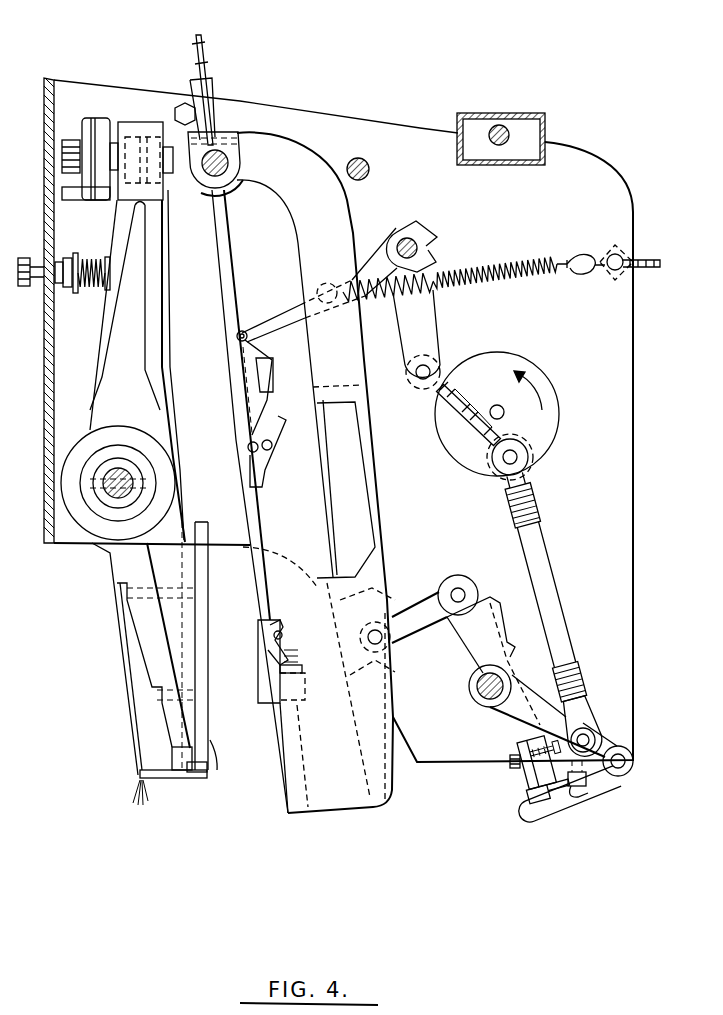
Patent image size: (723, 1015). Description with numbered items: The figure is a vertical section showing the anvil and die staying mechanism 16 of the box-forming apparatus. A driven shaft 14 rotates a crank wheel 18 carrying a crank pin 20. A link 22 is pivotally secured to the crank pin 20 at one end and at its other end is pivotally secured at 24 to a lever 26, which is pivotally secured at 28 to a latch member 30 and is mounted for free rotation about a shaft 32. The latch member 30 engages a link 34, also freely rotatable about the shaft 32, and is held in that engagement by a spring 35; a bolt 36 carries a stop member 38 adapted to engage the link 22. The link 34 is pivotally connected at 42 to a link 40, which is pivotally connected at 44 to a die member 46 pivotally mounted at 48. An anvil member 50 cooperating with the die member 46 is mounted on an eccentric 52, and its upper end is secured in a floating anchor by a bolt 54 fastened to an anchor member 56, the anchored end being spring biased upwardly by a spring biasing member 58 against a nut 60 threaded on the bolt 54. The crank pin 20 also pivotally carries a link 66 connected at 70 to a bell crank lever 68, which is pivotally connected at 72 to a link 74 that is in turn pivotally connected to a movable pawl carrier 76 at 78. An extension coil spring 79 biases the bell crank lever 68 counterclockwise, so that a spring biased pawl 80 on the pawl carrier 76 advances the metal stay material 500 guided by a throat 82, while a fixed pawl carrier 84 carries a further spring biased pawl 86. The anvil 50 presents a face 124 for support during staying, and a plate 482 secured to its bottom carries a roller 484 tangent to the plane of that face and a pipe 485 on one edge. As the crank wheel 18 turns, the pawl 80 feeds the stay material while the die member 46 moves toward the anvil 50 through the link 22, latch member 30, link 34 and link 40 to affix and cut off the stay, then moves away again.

The shaft 14 is at (505, 415).
The anvil and die staying mechanism 16 is at (96, 836).
The crank wheel 18 is at (501, 385).
The crank pin 20 is at (520, 458).
The link 22 is at (551, 580).
The pivot 24 is at (592, 738).
The lever 26 is at (582, 712).
The pivot 28 is at (633, 761).
The latch member 30 is at (595, 788).
The shaft 32 is at (469, 689).
The link 34 is at (465, 645).
The spring 35 is at (575, 798).
The bolt 36 is at (509, 766).
The stop member 38 is at (518, 745).
The link 40 is at (415, 610).
The pivot 42 is at (468, 588).
The pivot 44 is at (376, 630).
The die member 46 is at (332, 808).
The pivot 48 is at (222, 155).
The anvil member 50 is at (223, 771).
The eccentric 52 is at (150, 492).
The bolt 54 is at (228, 198).
The anchor member 56 is at (95, 118).
The spring biasing member 58 is at (78, 300).
The nut 60 is at (170, 185).
The link 66 is at (445, 398).
The bell crank lever 68 is at (373, 247).
The pivot 70 is at (417, 378).
The pivot 72 is at (244, 330).
The link 74 is at (255, 375).
The movable pawl carrier 76 is at (258, 458).
The pivot 78 is at (248, 445).
The extension coil spring 79 is at (490, 270).
The spring biased pawl 80 is at (272, 444).
The throat 82 is at (205, 83).
The fixed pawl carrier 84 is at (275, 620).
The spring biased pawl 86 is at (294, 649).
The anvil face 124 is at (204, 672).
The plate 482 is at (152, 772).
The roller 484 is at (194, 780).
The pipe 485 is at (135, 710).
The metal stay material 500 is at (203, 45).